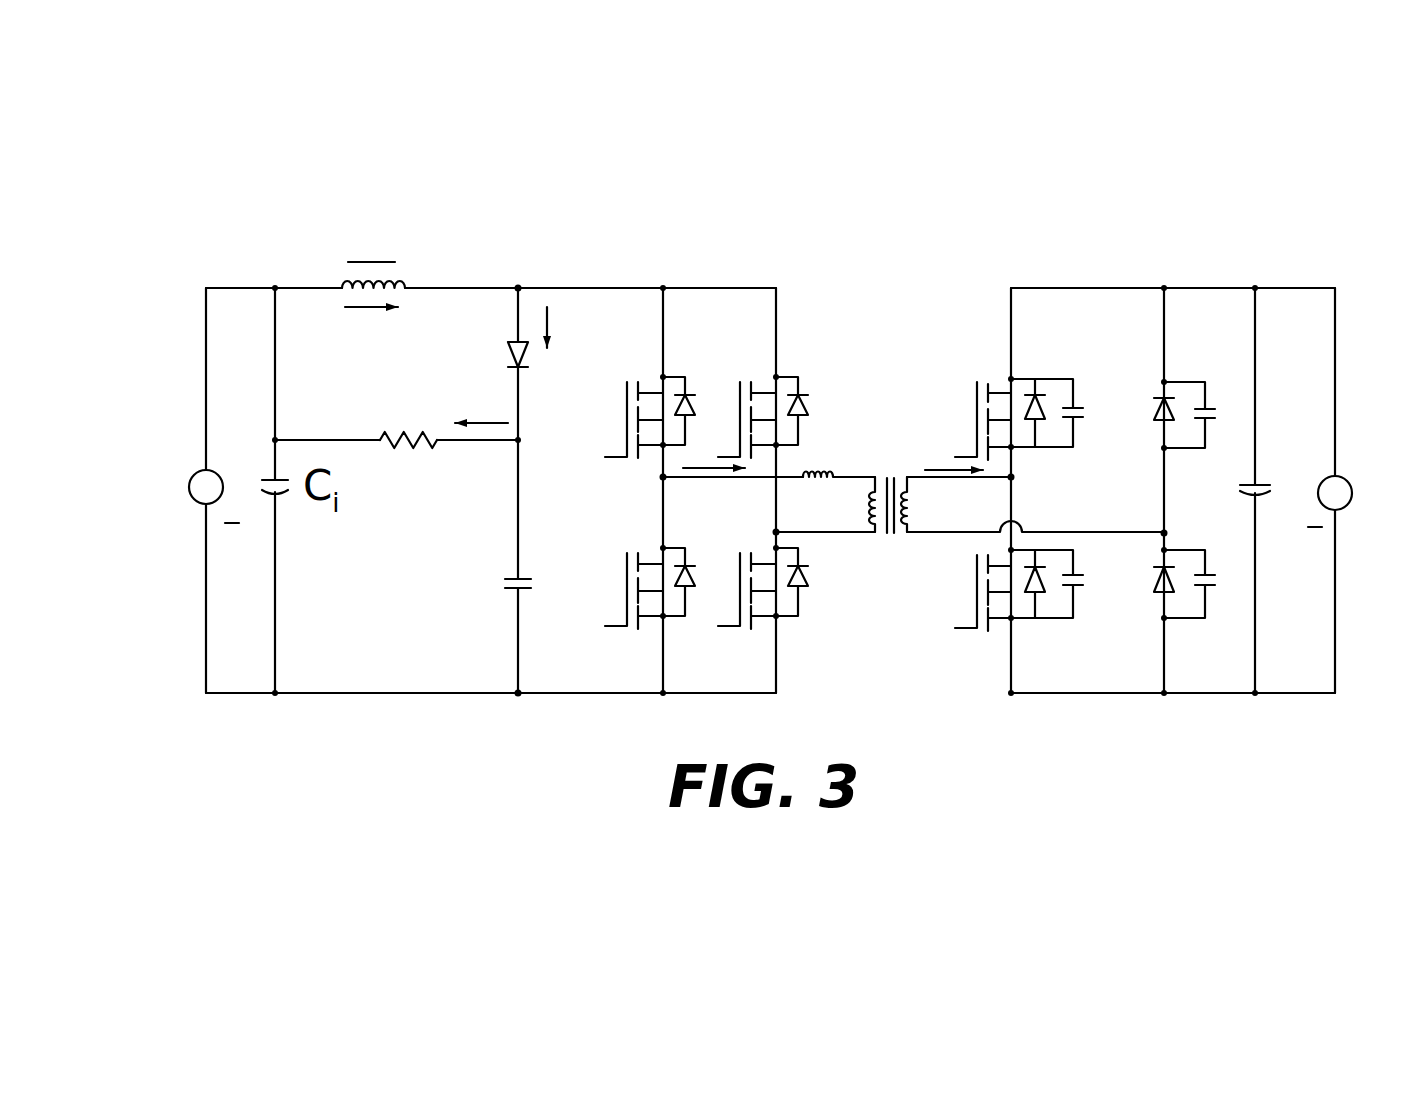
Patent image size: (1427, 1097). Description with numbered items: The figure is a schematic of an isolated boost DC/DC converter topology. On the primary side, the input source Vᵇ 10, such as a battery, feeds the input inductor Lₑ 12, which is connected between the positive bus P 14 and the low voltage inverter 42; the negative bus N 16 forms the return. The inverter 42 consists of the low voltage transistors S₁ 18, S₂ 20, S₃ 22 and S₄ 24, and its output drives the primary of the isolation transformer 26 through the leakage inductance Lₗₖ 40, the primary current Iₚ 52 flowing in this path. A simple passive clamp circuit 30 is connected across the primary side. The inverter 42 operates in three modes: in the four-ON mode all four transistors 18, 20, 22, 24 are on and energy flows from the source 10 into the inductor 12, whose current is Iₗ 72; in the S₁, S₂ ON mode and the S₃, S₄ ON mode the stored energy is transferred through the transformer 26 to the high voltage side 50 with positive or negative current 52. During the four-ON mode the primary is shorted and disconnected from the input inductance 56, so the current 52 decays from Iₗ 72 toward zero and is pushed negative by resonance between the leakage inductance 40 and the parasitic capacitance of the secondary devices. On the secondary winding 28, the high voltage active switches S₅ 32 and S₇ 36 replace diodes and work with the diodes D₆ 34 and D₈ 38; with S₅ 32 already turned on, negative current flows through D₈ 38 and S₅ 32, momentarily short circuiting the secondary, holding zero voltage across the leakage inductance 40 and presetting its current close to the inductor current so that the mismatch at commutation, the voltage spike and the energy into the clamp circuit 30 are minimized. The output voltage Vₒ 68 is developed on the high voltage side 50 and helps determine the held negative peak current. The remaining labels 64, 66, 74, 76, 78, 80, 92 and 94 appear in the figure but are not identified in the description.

The input source 10 is at (203, 470).
The input inductor 12 is at (342, 276).
The positive bus 14 is at (522, 284).
The negative bus 16 is at (520, 695).
The low voltage transistor S1 18 is at (683, 378).
The low voltage transistor S2 20 is at (790, 620).
The low voltage transistor S3 22 is at (683, 618).
The low voltage transistor S4 24 is at (797, 377).
The isolation transformer 26 is at (890, 590).
The secondary winding 28 is at (920, 405).
The clamp circuit 30 is at (400, 411).
The secondary switch S5 32 is at (1012, 379).
The diode D6 34 is at (1163, 596).
The secondary switch S7 36 is at (1020, 620).
The diode D8 38 is at (1164, 398).
The leakage inductance 40 is at (864, 425).
The low voltage inverter 42 is at (710, 262).
The high voltage side 50 is at (1215, 262).
The primary current 52 is at (688, 520).
The input inductance 56 is at (818, 456).
The input filter 64 is at (438, 245).
The output capacitor Co 66 is at (1263, 495).
The output voltage 68 is at (1349, 478).
The inductor current 72 is at (404, 339).
The node A 74 is at (660, 477).
The node B 76 is at (776, 532).
The node C 78 is at (1014, 483).
The node D 80 is at (1164, 533).
The clamp capacitor Cc 92 is at (522, 588).
The clamp diode Dc 94 is at (527, 353).